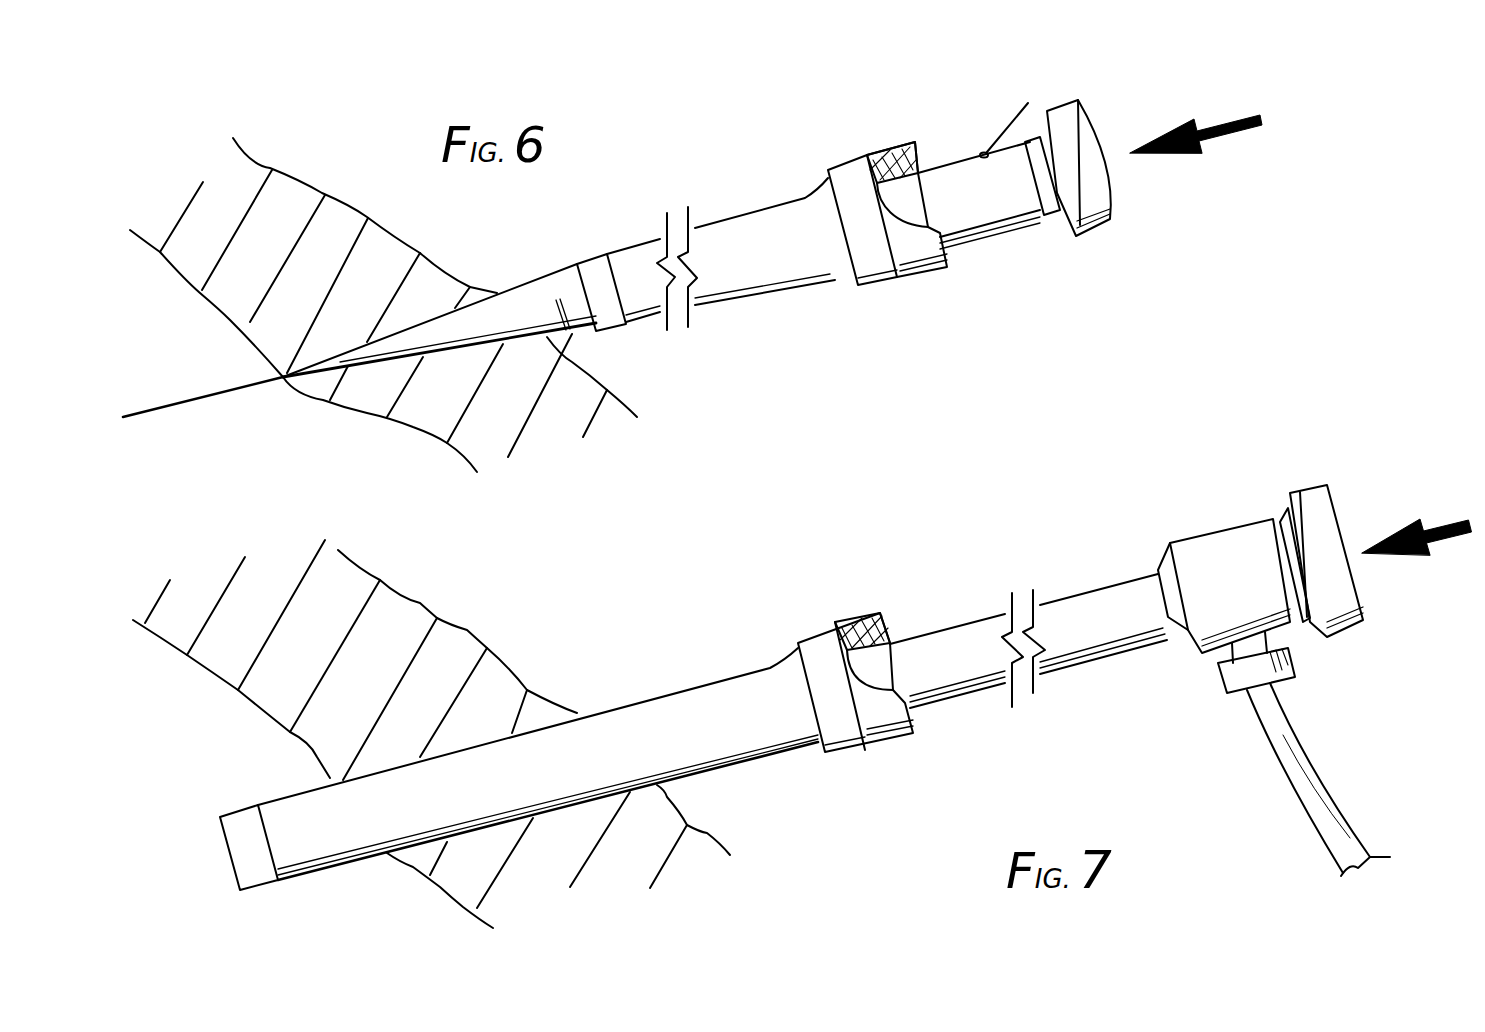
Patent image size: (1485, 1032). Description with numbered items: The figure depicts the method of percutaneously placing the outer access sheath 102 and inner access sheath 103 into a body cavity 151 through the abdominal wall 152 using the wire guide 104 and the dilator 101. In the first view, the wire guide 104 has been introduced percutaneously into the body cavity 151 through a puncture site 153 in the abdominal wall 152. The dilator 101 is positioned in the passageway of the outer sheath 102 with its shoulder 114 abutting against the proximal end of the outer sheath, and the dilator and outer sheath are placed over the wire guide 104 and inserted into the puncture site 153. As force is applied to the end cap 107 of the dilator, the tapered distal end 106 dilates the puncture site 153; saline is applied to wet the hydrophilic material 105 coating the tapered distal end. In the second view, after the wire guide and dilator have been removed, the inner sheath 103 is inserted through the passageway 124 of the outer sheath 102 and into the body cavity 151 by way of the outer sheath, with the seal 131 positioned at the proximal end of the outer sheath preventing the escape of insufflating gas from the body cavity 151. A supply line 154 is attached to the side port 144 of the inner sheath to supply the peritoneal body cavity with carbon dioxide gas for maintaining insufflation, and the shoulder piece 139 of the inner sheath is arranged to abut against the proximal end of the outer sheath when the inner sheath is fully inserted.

In FIG. 6, the dilator 101 is at (567, 268).
In FIG. 6, the outer access sheath 102 is at (740, 213).
In FIG. 7, the outer access sheath 102 is at (640, 643).
In FIG. 7, the inner access sheath 103 is at (1067, 580).
In FIG. 6, the wire guide 104 is at (185, 405).
In FIG. 6, the hydrophilic material 105 is at (502, 292).
In FIG. 6, the tapered distal end 106 is at (490, 262).
In FIG. 6, the end cap 107 is at (1090, 123).
In FIG. 6, the shoulder 114 is at (907, 167).
In FIG. 7, the passageway 124 is at (857, 620).
In FIG. 7, the seal 131 is at (890, 637).
In FIG. 7, the shoulder piece 139 is at (1212, 530).
In FIG. 7, the side port 144 is at (1230, 655).
In FIG. 6, the body cavity 151 is at (140, 310).
In FIG. 7, the body cavity 151 is at (253, 727).
In FIG. 6, the abdominal wall 152 is at (365, 217).
In FIG. 7, the abdominal wall 152 is at (467, 630).
In FIG. 6, the puncture site 153 is at (290, 380).
In FIG. 7, the supply line 154 is at (1267, 740).